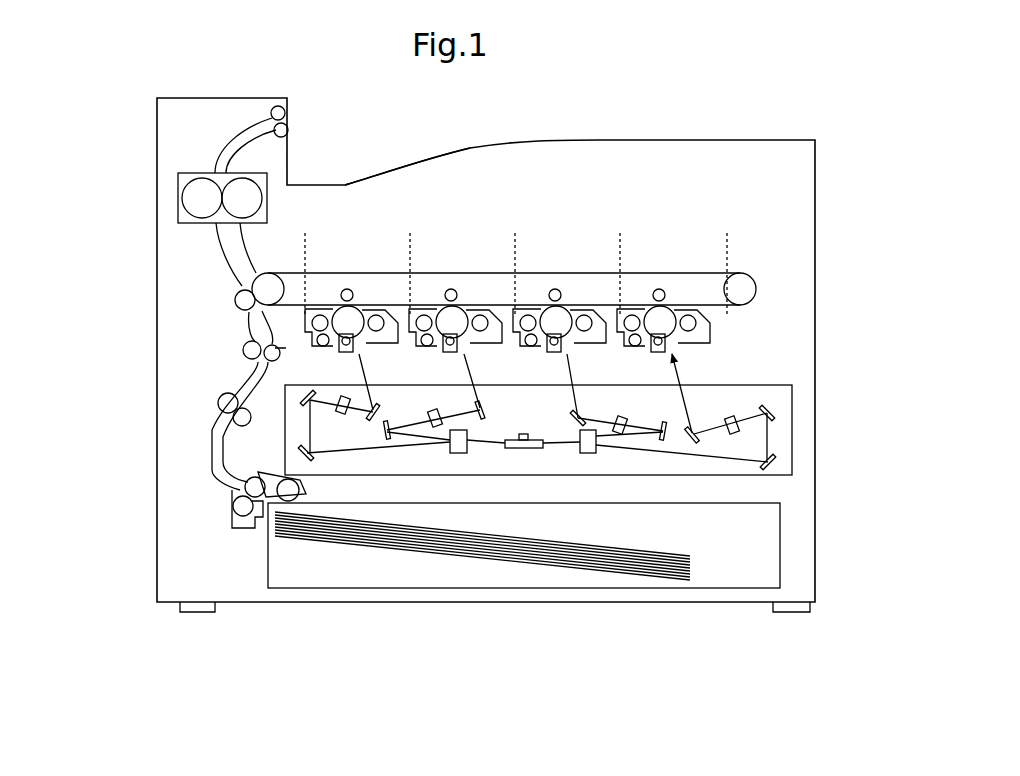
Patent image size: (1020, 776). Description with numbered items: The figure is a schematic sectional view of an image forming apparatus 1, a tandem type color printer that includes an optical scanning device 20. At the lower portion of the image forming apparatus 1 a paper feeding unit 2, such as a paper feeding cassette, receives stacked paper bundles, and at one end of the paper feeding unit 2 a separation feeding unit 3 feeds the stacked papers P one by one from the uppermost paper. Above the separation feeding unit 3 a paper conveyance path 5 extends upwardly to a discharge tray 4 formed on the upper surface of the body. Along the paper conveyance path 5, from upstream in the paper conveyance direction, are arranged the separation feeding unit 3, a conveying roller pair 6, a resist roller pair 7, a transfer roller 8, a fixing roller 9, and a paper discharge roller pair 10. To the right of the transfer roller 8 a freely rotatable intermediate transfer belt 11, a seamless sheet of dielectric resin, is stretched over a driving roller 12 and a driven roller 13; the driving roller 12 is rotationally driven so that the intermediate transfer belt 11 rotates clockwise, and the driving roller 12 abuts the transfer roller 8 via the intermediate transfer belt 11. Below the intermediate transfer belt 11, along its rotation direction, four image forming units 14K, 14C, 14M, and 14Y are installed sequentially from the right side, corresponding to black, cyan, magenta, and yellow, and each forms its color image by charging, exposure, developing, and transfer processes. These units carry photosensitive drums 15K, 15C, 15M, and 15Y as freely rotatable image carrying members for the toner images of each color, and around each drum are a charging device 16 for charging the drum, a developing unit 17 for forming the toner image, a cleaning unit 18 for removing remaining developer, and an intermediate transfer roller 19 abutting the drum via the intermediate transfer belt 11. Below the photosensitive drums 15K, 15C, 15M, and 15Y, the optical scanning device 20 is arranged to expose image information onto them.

The image forming apparatus 1 is at (674, 128).
The paper feeding unit 2 is at (755, 537).
The separation feeding unit 3 is at (245, 487).
The discharge tray 4 is at (408, 162).
The paper conveyance path 5 is at (212, 462).
The conveying roller pair 6 is at (218, 403).
The resist roller pair 7 is at (243, 350).
The transfer roller 8 is at (235, 300).
The fixing roller 9 is at (200, 197).
The paper discharge roller pair 10 is at (285, 110).
The intermediate transfer belt 11 is at (297, 272).
The driving roller 12 is at (262, 287).
The driven roller 13 is at (746, 290).
The image forming unit 14Y is at (408, 243).
The image forming unit 14M is at (513, 243).
The image forming unit 14C is at (618, 243).
The image forming unit 14K is at (725, 243).
The photosensitive drum 15Y is at (353, 312).
The photosensitive drum 15M is at (457, 312).
The photosensitive drum 15C is at (561, 312).
The photosensitive drum 15K is at (665, 312).
The charging device 16 is at (344, 354).
The developing unit 17 is at (379, 346).
The cleaning unit 18 is at (318, 348).
The intermediate transfer roller 19 is at (341, 294).
The optical scanning device 20 is at (787, 432).
The paper P is at (408, 542).